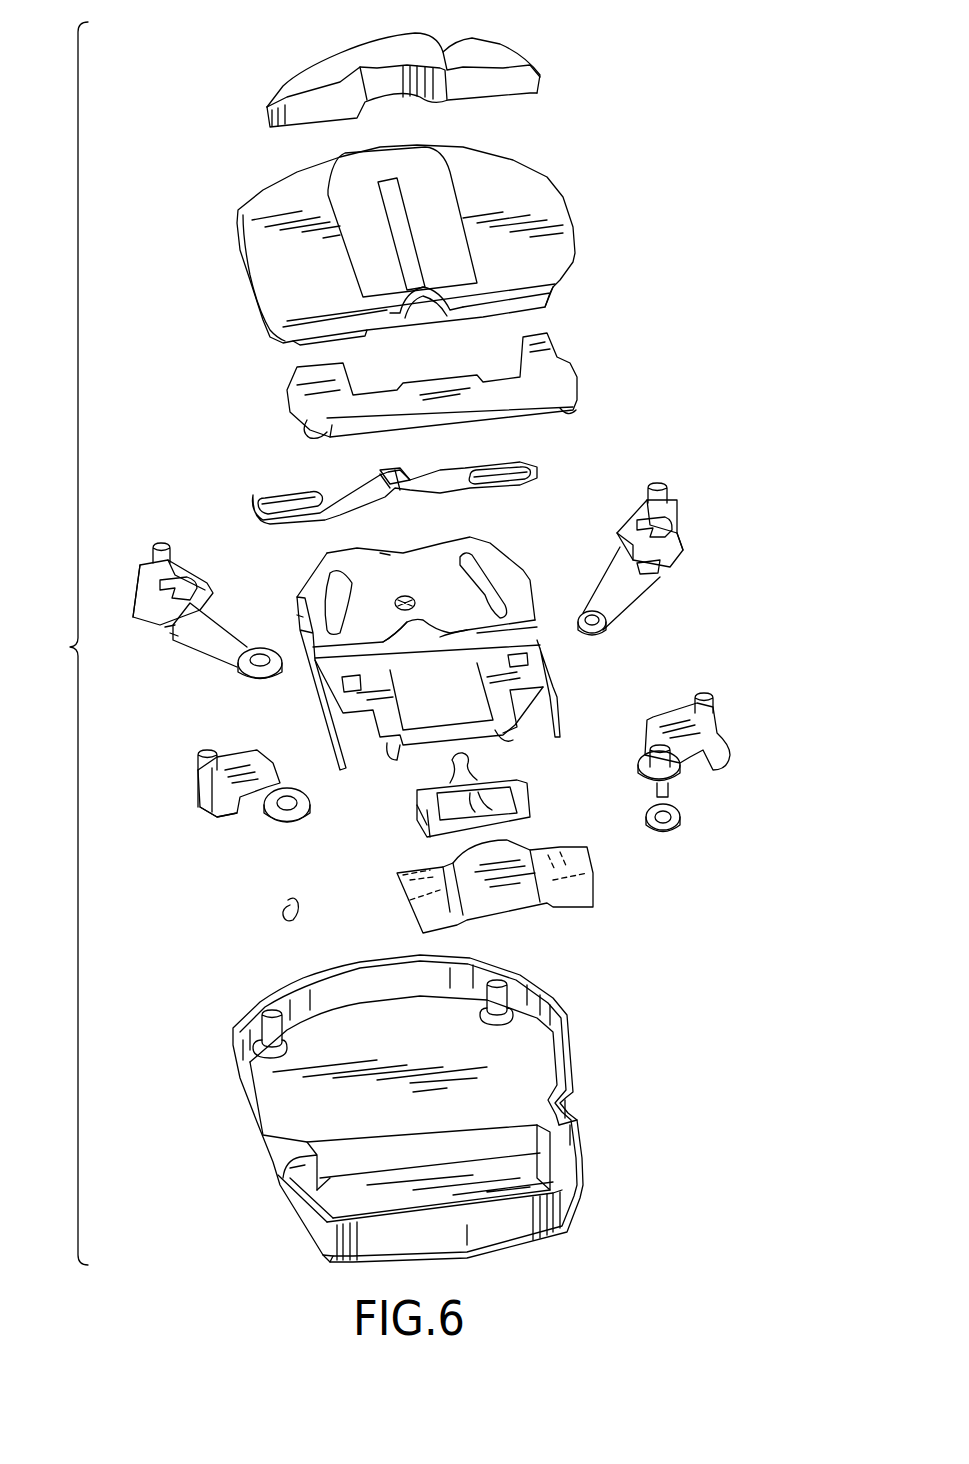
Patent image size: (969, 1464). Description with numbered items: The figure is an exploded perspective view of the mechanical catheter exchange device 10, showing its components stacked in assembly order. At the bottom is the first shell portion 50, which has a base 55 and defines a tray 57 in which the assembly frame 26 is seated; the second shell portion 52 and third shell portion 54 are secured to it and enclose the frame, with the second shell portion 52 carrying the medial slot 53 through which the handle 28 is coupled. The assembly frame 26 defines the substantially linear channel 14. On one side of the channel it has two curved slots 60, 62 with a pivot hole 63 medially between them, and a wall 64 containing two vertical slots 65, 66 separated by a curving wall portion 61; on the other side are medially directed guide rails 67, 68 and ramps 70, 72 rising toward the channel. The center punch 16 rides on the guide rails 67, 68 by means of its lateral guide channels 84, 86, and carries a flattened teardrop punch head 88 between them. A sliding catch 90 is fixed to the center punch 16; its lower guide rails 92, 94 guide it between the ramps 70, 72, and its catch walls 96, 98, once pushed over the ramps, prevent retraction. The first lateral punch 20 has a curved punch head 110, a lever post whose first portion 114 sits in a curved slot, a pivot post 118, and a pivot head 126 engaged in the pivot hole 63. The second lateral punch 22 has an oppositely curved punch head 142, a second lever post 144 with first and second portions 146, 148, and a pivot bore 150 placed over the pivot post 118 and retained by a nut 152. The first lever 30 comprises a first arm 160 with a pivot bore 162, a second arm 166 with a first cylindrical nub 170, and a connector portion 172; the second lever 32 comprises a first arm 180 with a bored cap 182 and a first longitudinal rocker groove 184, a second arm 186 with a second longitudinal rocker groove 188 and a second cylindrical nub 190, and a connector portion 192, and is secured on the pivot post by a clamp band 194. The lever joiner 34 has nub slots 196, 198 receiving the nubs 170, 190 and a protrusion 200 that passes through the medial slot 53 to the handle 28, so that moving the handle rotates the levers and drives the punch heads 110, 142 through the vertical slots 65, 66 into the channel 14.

The mechanical catheter exchange device 10 is at (59, 643).
The channel 14 is at (417, 649).
The center punch 16 is at (493, 848).
The first lateral punch 20 is at (684, 755).
The second lateral punch 22 is at (240, 780).
The assembly frame 26 is at (281, 598).
The handle 28 is at (470, 52).
The first lever 30 is at (199, 609).
The second lever 32 is at (643, 562).
The lever joiner 34 is at (430, 474).
The first shell portion 50 is at (401, 1117).
The second shell portion 52 is at (258, 272).
The medial slot 53 is at (393, 192).
The third shell portion 54 is at (290, 375).
The base 55 is at (477, 1245).
The tray 57 is at (553, 1052).
The curved slot 60 is at (335, 598).
The curving wall portion 61 is at (407, 620).
The curved slot 62 is at (495, 590).
The pivot hole 63 is at (415, 598).
The wall 64 is at (298, 628).
The vertical slot 65 is at (390, 640).
The vertical slot 66 is at (457, 630).
The guide rail 67 is at (397, 757).
The guide rail 68 is at (507, 737).
The ramp 70 is at (352, 692).
The ramp 72 is at (525, 660).
The lateral guide channel 84 is at (427, 835).
The lateral guide channel 86 is at (530, 812).
The punch head 88 is at (470, 760).
The sliding catch 90 is at (535, 905).
The lower guide rail 92 is at (403, 882).
The lower guide rail 94 is at (562, 852).
The catch wall 96 is at (412, 905).
The catch wall 98 is at (595, 883).
The curved punch head 110 is at (728, 755).
The first portion of first lever post 114 is at (715, 695).
The pivot post 118 is at (655, 793).
The pivot head 126 is at (648, 757).
The curved punch head 142 is at (222, 820).
The second lever post 144 is at (196, 783).
The first portion of second lever post 146 is at (198, 760).
The second portion of second lever post 148 is at (200, 815).
The pivot bore 150 is at (290, 812).
The nut 152 is at (678, 833).
The first arm 160 is at (210, 660).
The pivot bore 162 is at (268, 675).
The second arm 166 is at (187, 578).
The first cylindrical nub 170 is at (172, 530).
The connector portion 172 is at (137, 590).
The first arm 180 is at (605, 588).
The bored cap 182 is at (600, 633).
The first longitudinal rocker groove 184 is at (660, 575).
The second arm 186 is at (630, 512).
The second longitudinal rocker groove 188 is at (670, 530).
The second cylindrical nub 190 is at (663, 485).
The connector portion 192 is at (680, 540).
The clamp band 194 is at (285, 915).
The nub slot 196 is at (262, 500).
The nub slot 198 is at (513, 475).
The protrusion 200 is at (380, 468).